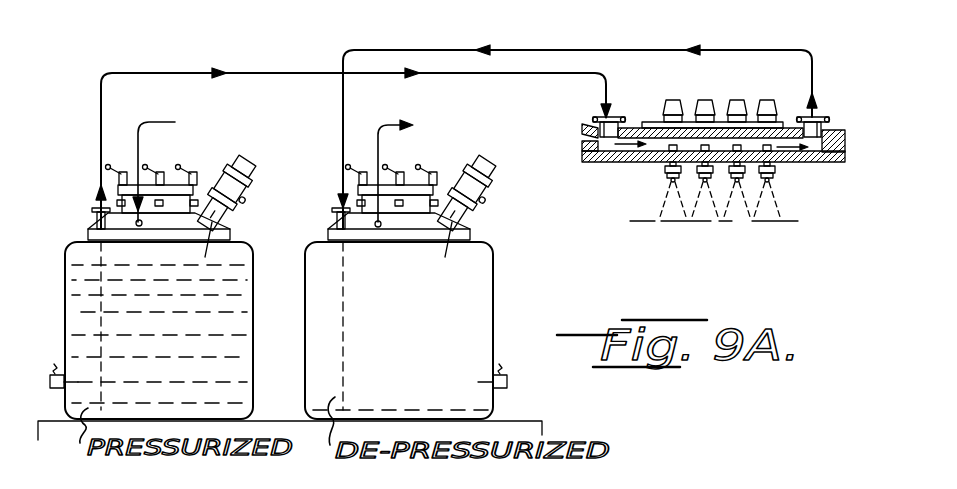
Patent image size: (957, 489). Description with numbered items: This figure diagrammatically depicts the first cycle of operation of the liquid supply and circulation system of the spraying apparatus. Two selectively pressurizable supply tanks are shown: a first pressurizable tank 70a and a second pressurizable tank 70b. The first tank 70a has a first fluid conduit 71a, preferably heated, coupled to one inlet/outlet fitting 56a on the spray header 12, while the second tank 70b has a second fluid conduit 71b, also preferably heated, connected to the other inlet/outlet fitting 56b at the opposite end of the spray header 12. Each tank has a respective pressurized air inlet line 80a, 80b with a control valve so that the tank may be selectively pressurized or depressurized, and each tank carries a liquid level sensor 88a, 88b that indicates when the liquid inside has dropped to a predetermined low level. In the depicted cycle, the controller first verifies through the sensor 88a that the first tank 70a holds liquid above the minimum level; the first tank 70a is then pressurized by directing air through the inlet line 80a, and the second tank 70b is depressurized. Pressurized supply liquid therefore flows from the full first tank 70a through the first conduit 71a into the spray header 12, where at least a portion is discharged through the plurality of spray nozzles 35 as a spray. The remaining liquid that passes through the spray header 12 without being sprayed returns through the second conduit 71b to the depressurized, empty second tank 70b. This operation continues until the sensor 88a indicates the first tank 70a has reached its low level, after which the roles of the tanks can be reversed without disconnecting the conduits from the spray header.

The first fluid conduit 71a is at (188, 72).
The second fluid conduit 71b is at (634, 50).
The pressurized air inlet line 80a is at (138, 138).
The pressurized air inlet line 80b is at (378, 130).
The first pressurizable tank 70a is at (78, 240).
The second pressurizable tank 70b is at (473, 293).
The inlet/outlet fitting 56a is at (618, 118).
The inlet/outlet fitting 56b is at (800, 118).
The spray header 12 is at (704, 139).
The spray nozzles 35 is at (775, 180).
The liquid level sensor 88a is at (50, 386).
The liquid level sensor 88b is at (508, 381).